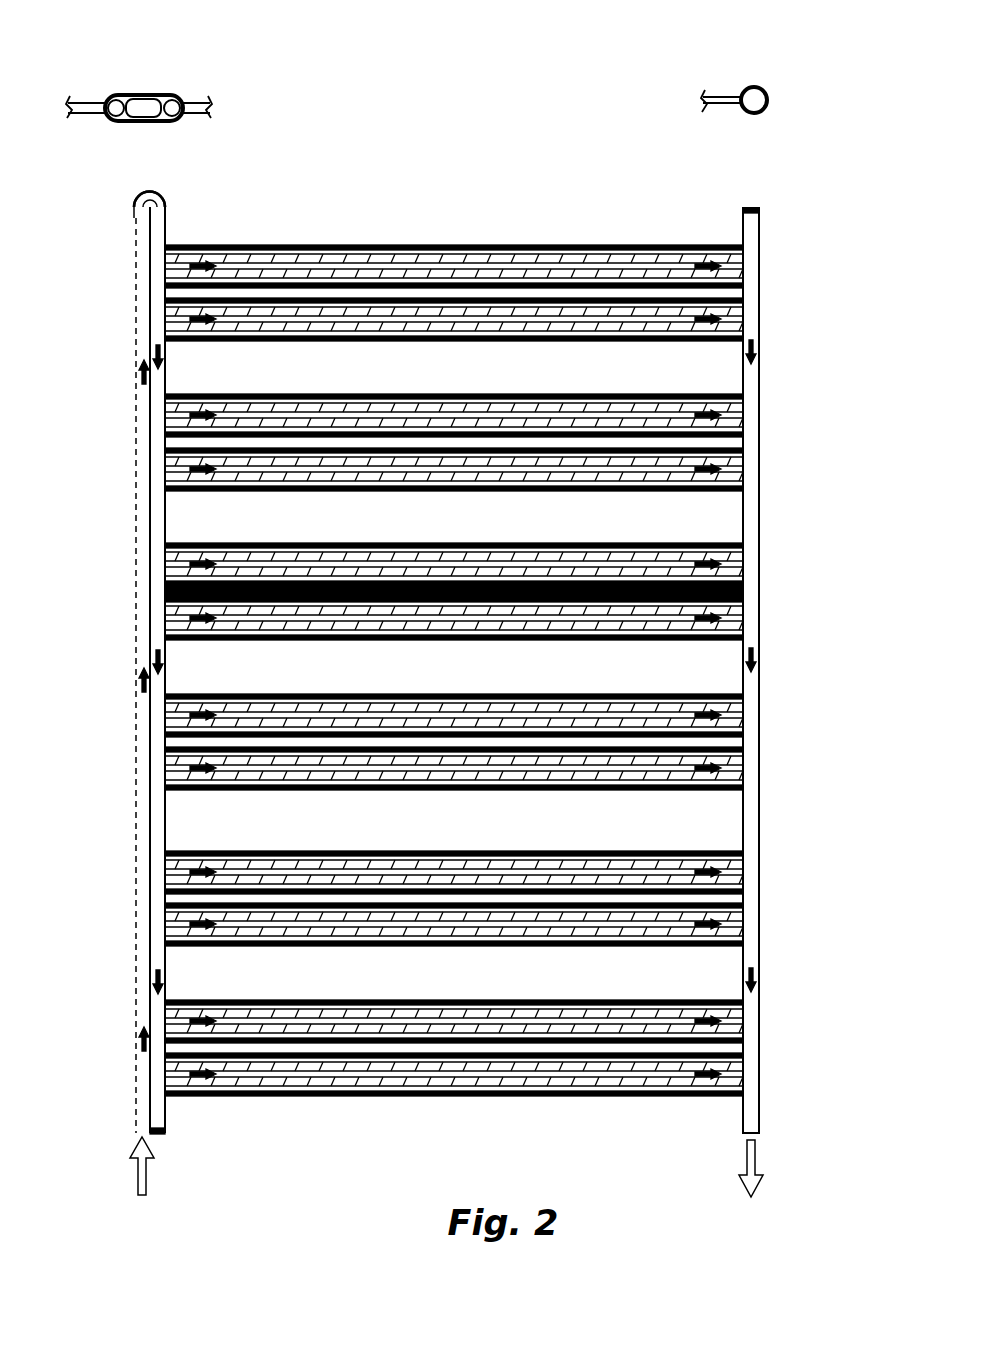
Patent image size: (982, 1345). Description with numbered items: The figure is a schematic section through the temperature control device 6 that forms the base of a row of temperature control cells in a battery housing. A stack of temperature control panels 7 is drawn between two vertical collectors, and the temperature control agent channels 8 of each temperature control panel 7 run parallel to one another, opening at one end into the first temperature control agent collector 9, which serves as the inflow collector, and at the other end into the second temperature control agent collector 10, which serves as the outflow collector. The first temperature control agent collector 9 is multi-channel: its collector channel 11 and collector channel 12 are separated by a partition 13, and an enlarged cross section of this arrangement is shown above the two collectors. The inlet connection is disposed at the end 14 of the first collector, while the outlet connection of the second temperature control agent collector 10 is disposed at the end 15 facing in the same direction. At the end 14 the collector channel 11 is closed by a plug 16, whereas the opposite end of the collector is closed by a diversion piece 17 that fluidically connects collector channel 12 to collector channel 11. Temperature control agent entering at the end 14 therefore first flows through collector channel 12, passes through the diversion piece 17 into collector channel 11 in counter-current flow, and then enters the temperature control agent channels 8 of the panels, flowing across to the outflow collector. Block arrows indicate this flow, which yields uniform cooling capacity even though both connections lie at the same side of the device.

The temperature control device 6 is at (513, 210).
The temperature control panel 7 is at (281, 244).
The temperature control agent channel 8 is at (421, 312).
The first temperature control agent collector 9 is at (157, 95).
The second temperature control agent collector 10 is at (752, 85).
The collector channel 11 is at (178, 100).
The collector channel 12 is at (140, 108).
The partition 13 is at (150, 622).
The end 14 is at (133, 1135).
The end 15 is at (742, 1135).
The plug 16 is at (165, 1137).
The diversion piece 17 is at (166, 195).